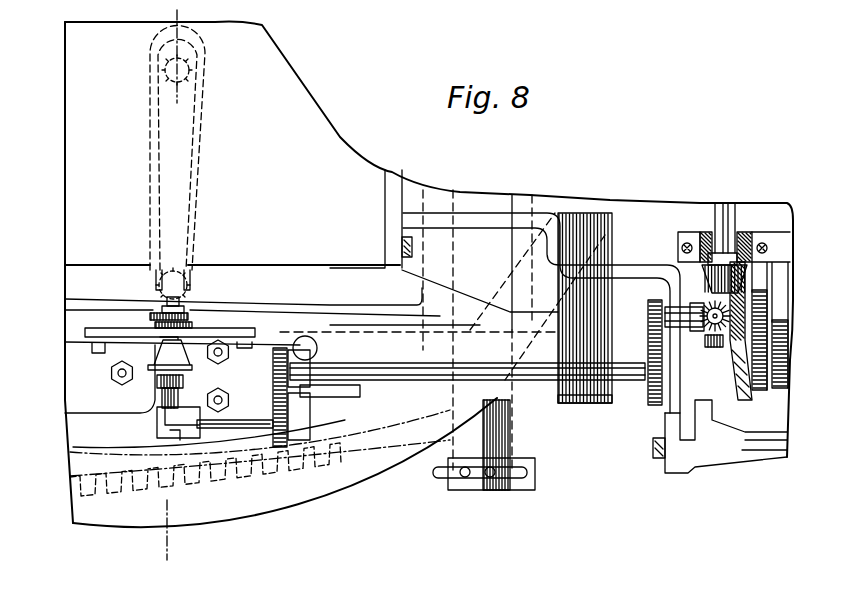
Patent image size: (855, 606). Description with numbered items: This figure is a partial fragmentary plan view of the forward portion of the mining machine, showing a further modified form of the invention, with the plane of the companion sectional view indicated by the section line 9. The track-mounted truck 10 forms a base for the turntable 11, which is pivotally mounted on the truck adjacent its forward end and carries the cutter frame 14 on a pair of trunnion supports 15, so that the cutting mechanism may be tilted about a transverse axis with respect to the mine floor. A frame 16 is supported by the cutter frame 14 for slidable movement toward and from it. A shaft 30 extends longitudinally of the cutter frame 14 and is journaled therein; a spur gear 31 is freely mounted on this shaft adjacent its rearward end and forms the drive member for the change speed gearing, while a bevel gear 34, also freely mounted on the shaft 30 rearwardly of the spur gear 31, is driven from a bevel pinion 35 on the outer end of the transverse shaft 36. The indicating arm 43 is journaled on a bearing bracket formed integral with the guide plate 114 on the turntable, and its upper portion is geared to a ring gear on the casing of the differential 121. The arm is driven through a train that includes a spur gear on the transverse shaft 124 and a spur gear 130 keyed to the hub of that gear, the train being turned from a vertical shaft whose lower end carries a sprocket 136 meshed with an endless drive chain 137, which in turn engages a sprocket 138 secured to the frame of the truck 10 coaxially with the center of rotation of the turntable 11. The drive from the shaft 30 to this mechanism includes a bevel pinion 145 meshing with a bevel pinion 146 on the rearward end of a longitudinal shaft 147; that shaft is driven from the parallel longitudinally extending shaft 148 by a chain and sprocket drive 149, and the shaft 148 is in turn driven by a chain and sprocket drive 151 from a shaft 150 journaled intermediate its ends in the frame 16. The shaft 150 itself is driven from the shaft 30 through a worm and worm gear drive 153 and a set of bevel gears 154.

The section line 9- 9 is at (168, 18).
The track-mounted truck 10 is at (494, 498).
The turntable 11 is at (143, 455).
The cutter frame 14 is at (574, 207).
The trunnion supports 15 is at (581, 404).
The frame 16 is at (768, 457).
The shaft 30 is at (735, 397).
The spur gear 31 is at (785, 313).
The bevel gear 34 is at (748, 407).
The bevel pinion 35 is at (702, 277).
The transverse shaft 36 is at (757, 192).
The indicating arm 43 is at (198, 356).
The guide plate 114 is at (98, 332).
The differential 121 is at (148, 393).
The transverse shaft 124 is at (203, 320).
The spur gear 130 is at (160, 311).
The sprocket 136 is at (178, 270).
The endless drive chain 137 is at (192, 277).
The sprocket 138 is at (185, 78).
The bevel pinion 145 is at (162, 415).
The bevel pinion 146 is at (173, 438).
The longitudinal shaft 147 is at (262, 410).
The longitudinally extending shaft 148 is at (395, 370).
The chain and sprocket drive 149 is at (266, 441).
The shaft 150 is at (665, 294).
The chain and sprocket drive 151 is at (645, 414).
The worm and worm gear drive 153 is at (707, 355).
The set of bevel gears 154 is at (697, 332).